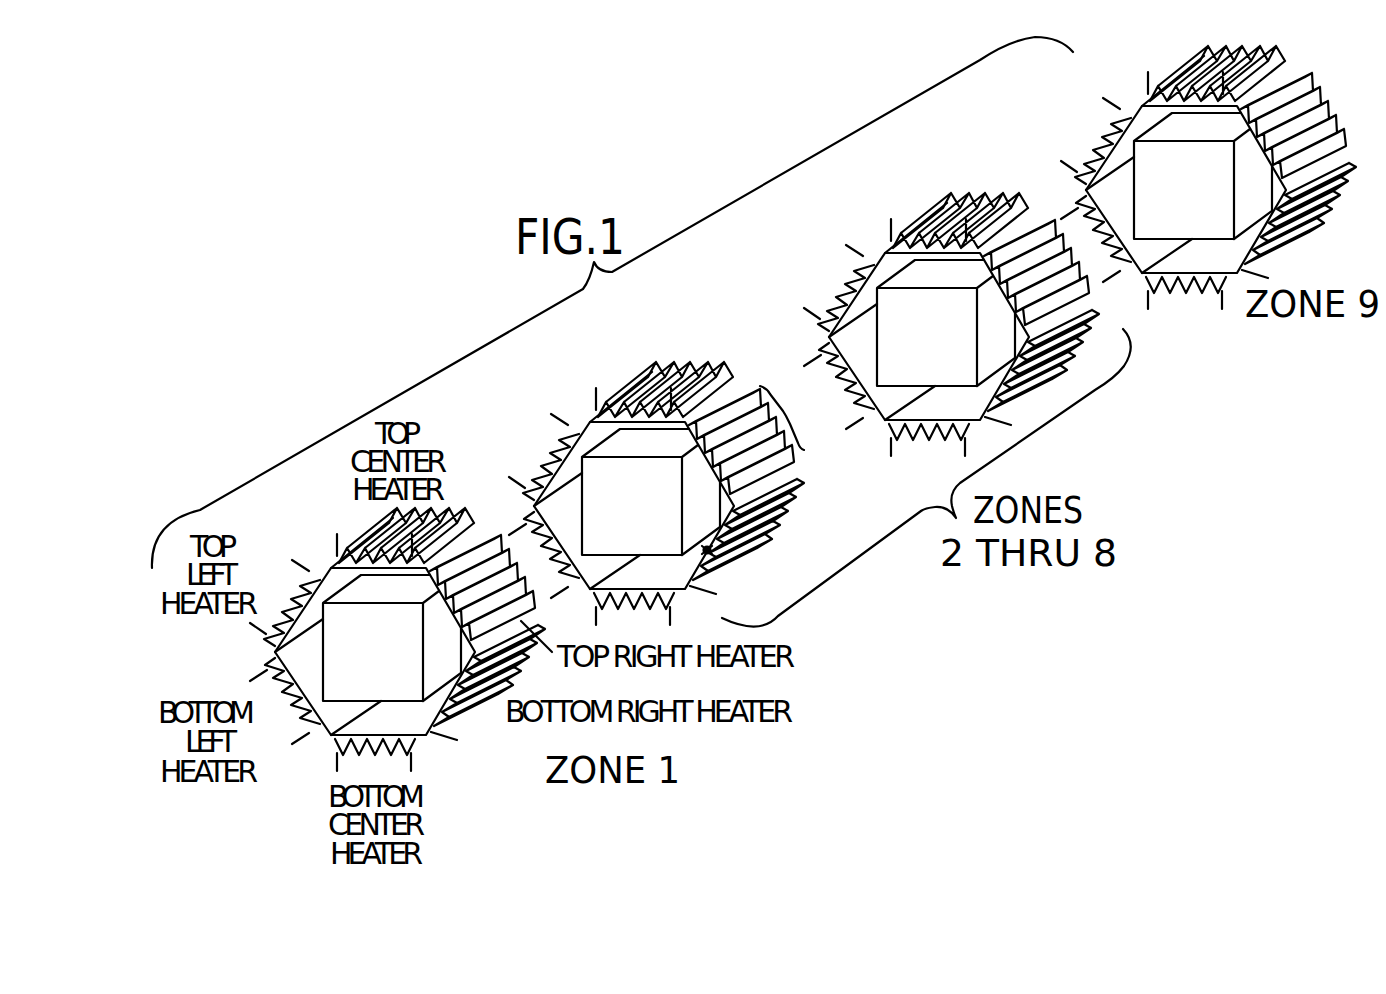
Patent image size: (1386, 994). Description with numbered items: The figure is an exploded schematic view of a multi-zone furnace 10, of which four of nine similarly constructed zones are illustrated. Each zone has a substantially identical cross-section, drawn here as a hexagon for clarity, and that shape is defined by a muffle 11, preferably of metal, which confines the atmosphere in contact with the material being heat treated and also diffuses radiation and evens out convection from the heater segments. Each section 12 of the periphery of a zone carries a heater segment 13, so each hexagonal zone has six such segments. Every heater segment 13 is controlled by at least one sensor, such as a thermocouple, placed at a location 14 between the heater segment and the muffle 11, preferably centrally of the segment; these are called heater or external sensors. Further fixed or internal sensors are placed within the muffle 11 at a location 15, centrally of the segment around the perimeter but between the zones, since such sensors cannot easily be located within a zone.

The multi-zone furnace 10 is at (562, 388).
The muffle 11 is at (780, 473).
The section 12 is at (788, 418).
The heater segment 13 is at (665, 378).
The location 14 is at (720, 571).
The location 15 is at (707, 549).